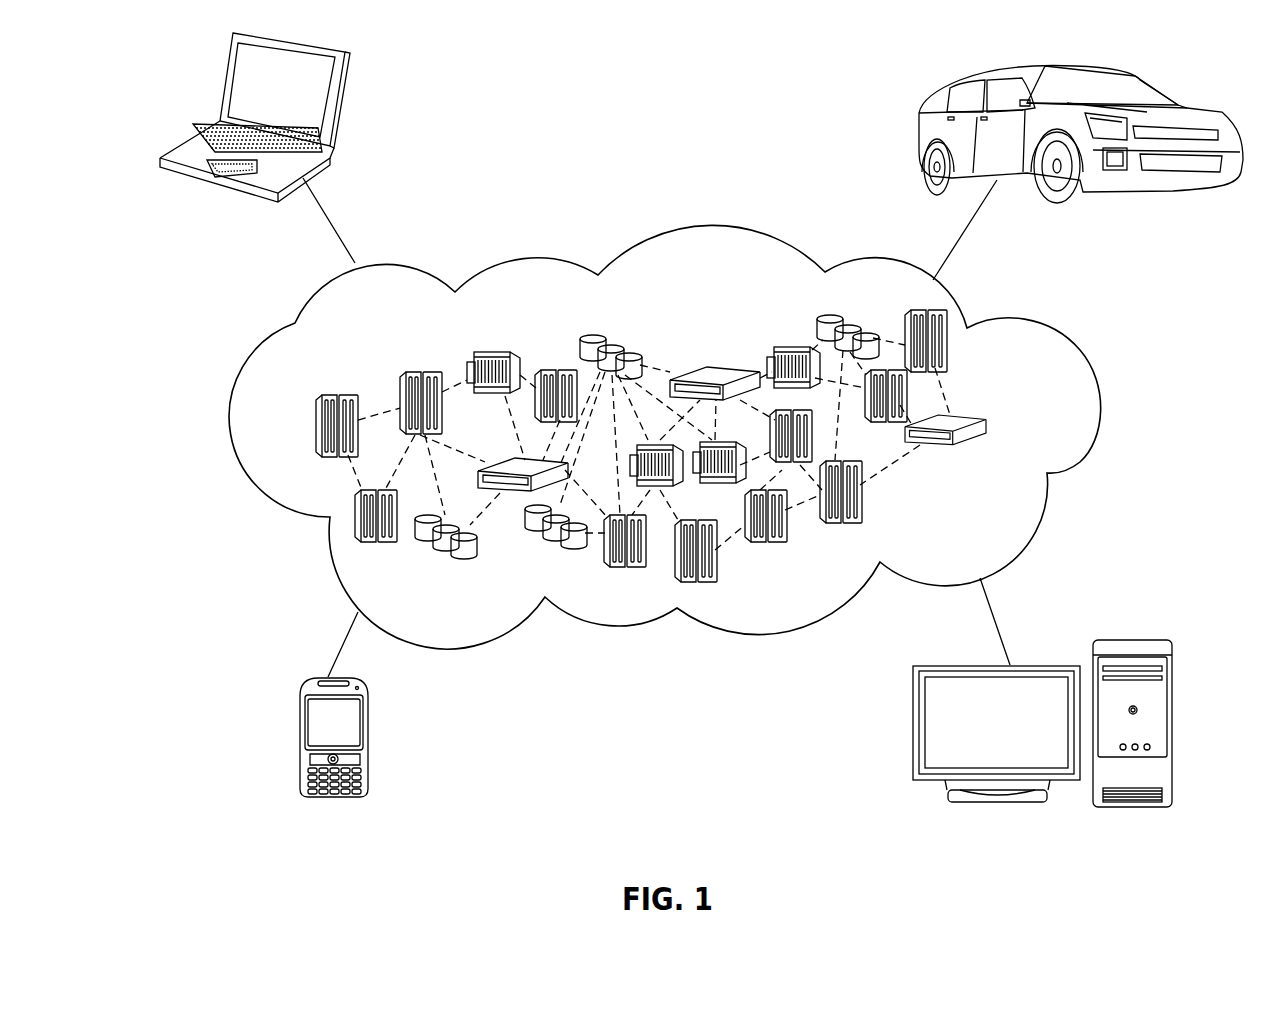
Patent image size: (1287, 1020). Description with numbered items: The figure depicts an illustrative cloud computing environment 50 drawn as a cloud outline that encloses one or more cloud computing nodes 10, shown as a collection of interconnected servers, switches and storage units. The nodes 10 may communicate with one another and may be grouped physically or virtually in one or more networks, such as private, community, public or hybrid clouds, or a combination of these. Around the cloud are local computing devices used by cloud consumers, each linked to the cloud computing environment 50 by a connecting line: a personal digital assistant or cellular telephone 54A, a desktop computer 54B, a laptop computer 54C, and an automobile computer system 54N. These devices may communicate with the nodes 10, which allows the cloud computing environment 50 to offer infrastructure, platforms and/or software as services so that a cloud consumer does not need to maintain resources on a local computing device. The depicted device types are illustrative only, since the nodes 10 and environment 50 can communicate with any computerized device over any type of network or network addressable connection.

The cloud computing nodes 10 is at (1030, 425).
The cloud computing environment 50 is at (1057, 342).
The personal digital assistant (PDA) or cellular telephone 54A is at (300, 740).
The desktop computer 54B is at (1138, 640).
The laptop computer 54C is at (340, 107).
The automobile computer system 54N is at (923, 112).